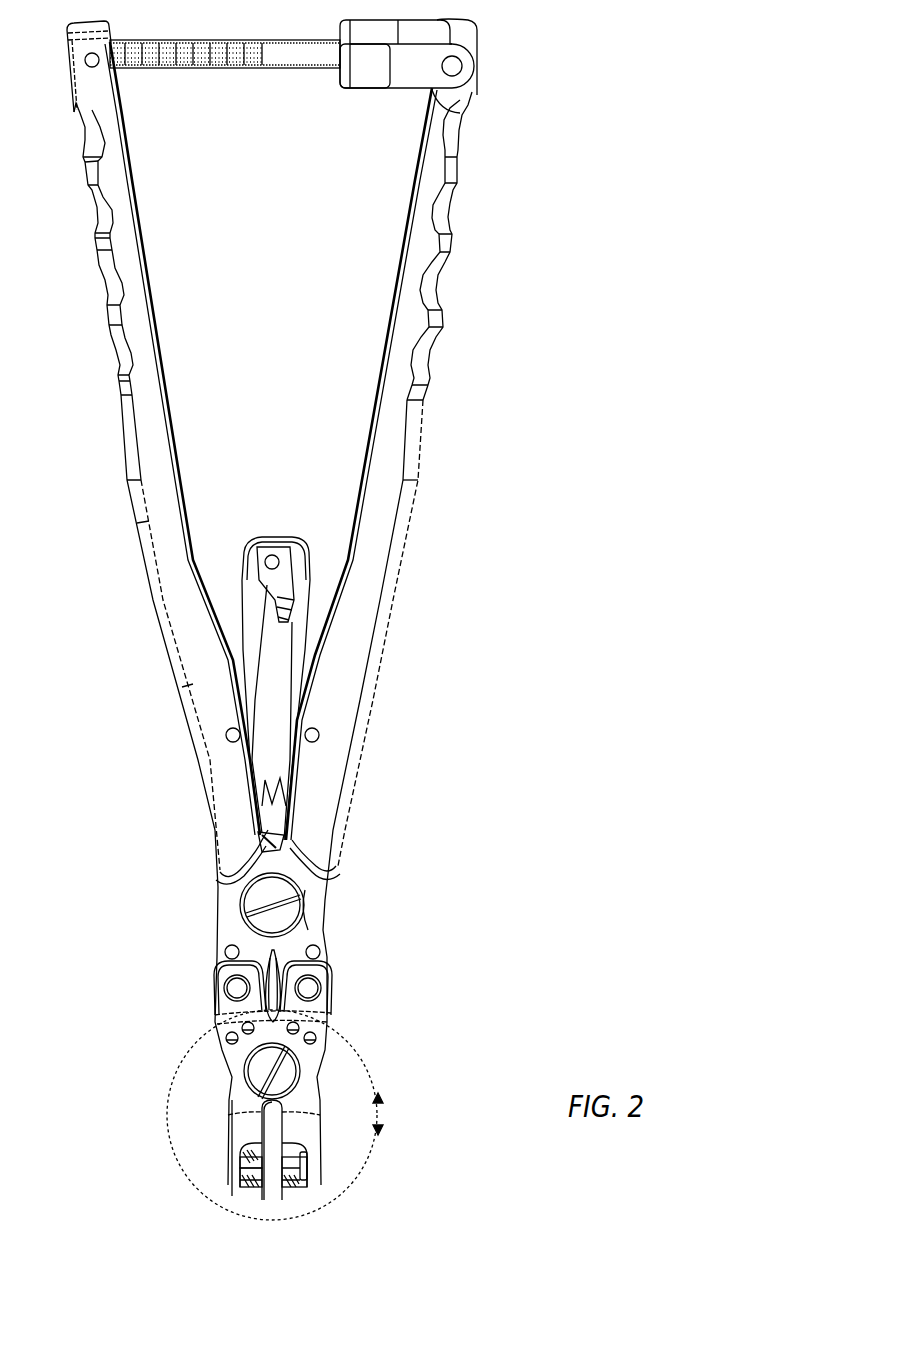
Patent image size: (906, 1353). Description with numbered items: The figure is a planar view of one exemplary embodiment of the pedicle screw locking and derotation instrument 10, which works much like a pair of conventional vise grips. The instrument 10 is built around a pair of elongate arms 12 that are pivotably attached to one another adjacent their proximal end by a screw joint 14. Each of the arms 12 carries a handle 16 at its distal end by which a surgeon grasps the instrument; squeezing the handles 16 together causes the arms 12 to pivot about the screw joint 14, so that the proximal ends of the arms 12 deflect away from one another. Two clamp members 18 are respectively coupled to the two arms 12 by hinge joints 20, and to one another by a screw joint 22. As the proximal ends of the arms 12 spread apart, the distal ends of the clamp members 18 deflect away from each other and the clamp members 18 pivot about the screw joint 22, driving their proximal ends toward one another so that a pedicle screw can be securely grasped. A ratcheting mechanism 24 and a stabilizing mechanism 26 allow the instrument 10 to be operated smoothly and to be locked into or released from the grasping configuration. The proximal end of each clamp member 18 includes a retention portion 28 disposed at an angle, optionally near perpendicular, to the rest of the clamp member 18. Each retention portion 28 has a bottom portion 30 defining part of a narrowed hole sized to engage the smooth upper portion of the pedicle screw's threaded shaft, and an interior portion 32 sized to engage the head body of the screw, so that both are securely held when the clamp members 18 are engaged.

The pedicle screw locking and derotation instrument 10 is at (448, 639).
The elongate arms 12 is at (431, 491).
The screw joint 14 is at (303, 877).
The handle 16 is at (468, 251).
The clamp members 18 is at (337, 1040).
The hinge joints 20 is at (331, 978).
The screw joint 22 is at (255, 1066).
The ratcheting mechanism 24 is at (421, 63).
The stabilizing mechanism 26 is at (215, 547).
The retention portion 28 is at (327, 1159).
The bottom portion 30 is at (242, 1177).
The interior portion 32 is at (248, 1160).